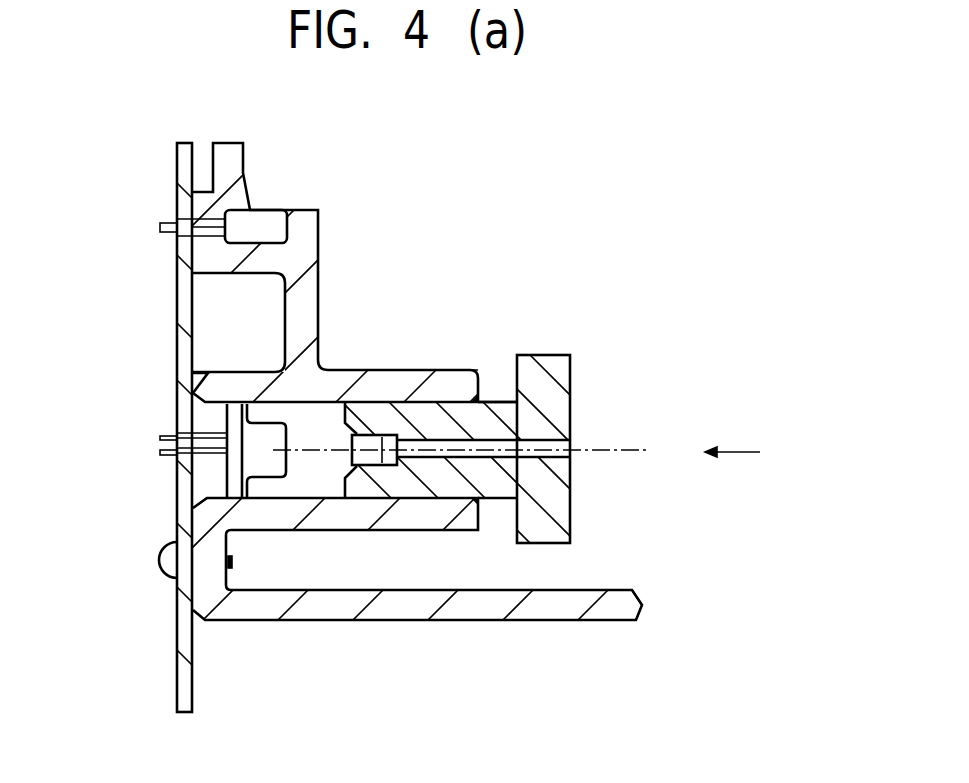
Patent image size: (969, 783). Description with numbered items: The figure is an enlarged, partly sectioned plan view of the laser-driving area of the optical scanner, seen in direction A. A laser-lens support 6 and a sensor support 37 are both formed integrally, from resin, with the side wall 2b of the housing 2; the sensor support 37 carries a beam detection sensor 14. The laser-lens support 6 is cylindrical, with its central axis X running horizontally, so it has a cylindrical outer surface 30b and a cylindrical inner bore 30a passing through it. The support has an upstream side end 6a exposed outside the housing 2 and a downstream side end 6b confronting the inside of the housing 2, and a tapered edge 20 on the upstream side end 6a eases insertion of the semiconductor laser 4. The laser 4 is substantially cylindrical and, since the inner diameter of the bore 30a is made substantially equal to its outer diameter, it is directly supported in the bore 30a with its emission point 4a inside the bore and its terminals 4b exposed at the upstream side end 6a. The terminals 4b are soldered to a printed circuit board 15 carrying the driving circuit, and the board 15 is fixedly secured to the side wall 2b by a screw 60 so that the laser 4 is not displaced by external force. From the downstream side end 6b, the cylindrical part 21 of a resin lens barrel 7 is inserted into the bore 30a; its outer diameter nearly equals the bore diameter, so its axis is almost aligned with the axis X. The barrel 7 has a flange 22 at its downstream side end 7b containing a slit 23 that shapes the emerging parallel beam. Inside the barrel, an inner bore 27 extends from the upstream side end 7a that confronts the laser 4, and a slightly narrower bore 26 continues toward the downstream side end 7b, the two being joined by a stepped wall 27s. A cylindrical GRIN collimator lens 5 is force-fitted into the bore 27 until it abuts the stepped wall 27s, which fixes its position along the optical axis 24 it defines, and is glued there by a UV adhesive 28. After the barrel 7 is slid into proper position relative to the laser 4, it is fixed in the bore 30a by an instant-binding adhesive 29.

The housing 2 is at (331, 398).
The side wall 2b is at (572, 610).
The semiconductor laser 4 is at (233, 422).
The emission point 4a is at (298, 462).
The terminals 4b is at (160, 452).
The collimator lens 5 is at (380, 457).
The laser-lens support 6 is at (291, 532).
The upstream side end 6a is at (192, 371).
The downstream side end 6b is at (482, 512).
The lens barrel 7 is at (540, 385).
The upstream side end 7a is at (346, 388).
The downstream side end 7b is at (575, 407).
The beam detection sensor 14 is at (268, 222).
The printed circuit board 15 is at (178, 302).
The tapered edge 20 is at (195, 500).
The cylindrical part 21 is at (503, 500).
The flange 22 is at (573, 525).
The slit 23 is at (572, 458).
The optical axis 24 is at (623, 450).
The inner cylindrical bore 26 is at (447, 435).
The inner cylindrical bore 27 is at (378, 428).
The stepped wall 27s is at (398, 466).
The adhesive 28 is at (369, 412).
The instant-binding adhesive 29 is at (485, 398).
The cylindrical inner bore 30a is at (303, 402).
The cylindrical outer surface 30b is at (423, 530).
The sensor support 37 is at (208, 255).
The screw 60 is at (163, 563).
The central axis X is at (279, 560).
The viewing direction A is at (748, 454).